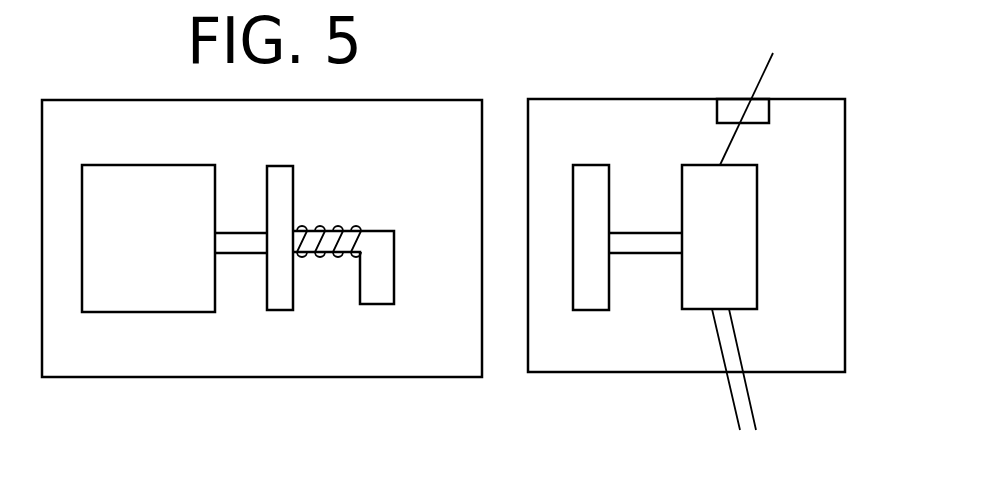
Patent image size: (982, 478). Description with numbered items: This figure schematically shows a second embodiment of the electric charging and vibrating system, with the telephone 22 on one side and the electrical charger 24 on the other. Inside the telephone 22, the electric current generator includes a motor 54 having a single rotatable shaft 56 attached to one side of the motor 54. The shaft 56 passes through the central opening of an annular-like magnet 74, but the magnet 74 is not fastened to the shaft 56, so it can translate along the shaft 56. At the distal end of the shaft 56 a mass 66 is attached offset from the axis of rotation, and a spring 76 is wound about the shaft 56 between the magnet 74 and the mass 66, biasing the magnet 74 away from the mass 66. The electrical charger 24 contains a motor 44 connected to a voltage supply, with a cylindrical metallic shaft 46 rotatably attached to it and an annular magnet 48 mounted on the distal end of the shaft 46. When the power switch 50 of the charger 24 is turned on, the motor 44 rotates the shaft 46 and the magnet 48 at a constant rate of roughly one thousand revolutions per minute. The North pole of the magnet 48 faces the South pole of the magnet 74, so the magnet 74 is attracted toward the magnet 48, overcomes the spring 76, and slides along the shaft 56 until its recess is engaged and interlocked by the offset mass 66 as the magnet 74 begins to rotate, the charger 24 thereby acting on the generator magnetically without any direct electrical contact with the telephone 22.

The telephone 22 is at (427, 120).
The electrical charger 24 is at (828, 118).
The motor 44 is at (758, 217).
The shaft 46 is at (635, 230).
The magnet 48 is at (596, 175).
The power switch 50 is at (763, 90).
The motor 54 is at (165, 177).
The rotatable shaft 56 is at (238, 230).
The mass 66 is at (373, 288).
The magnet 74 is at (278, 166).
The spring 76 is at (343, 228).